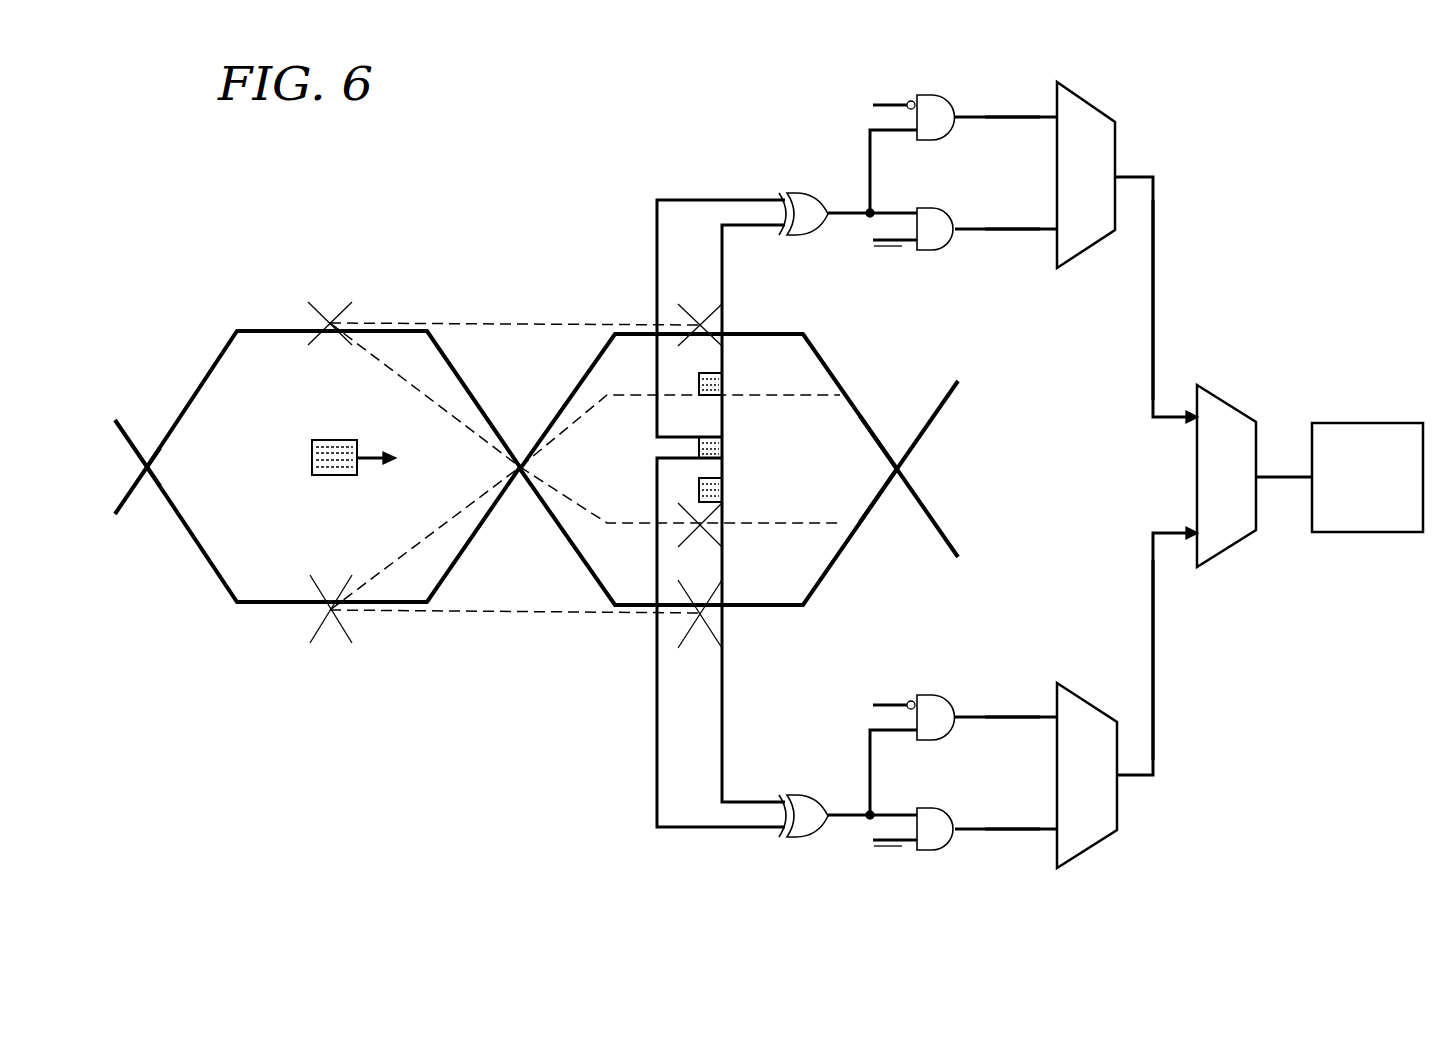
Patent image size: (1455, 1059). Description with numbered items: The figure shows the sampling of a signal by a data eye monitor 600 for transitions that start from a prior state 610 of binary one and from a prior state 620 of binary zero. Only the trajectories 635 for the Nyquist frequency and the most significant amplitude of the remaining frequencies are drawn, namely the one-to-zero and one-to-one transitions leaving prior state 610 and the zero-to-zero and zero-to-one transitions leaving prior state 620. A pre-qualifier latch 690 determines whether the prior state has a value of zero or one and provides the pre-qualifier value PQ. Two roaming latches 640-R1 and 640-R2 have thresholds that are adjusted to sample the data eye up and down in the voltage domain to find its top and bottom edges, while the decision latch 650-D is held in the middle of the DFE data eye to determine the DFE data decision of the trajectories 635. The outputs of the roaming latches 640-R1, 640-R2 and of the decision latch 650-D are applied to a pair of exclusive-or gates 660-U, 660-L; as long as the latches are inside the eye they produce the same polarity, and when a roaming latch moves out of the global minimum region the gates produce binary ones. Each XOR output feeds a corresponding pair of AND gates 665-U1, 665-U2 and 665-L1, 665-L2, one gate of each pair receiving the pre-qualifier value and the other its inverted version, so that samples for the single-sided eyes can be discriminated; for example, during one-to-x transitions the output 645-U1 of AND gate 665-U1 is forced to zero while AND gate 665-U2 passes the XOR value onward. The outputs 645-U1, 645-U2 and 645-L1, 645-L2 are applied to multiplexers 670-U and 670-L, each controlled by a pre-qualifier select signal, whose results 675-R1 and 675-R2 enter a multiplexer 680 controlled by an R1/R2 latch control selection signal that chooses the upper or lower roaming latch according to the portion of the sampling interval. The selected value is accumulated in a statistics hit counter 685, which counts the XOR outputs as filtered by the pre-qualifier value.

The data eye monitor 600 is at (355, 176).
The prior state 610 is at (312, 314).
The prior state 620 is at (312, 630).
The trajectories 635 is at (505, 636).
The roaming latch 640-R1 is at (753, 385).
The roaming latch 640-R2 is at (723, 492).
The decision latch 650-D is at (724, 448).
The exclusive or gate 660-U is at (800, 192).
The exclusive or gate 660-L is at (800, 838).
The AND gate 665-U1 is at (932, 96).
The AND gate 665-U2 is at (935, 250).
The AND gate 665-L1 is at (932, 696).
The AND gate 665-L2 is at (935, 850).
The output 645-U1 is at (1005, 119).
The output 645-U2 is at (1005, 228).
The output 645-L1 is at (1005, 719).
The output 645-L2 is at (1005, 828).
The multiplexer 670-U is at (1098, 110).
The multiplexer 670-L is at (1096, 848).
The R1 result line 675-R1 is at (1154, 252).
The R2 result line 675-R2 is at (1154, 698).
The multiplexer 680 is at (1226, 398).
The statistics hit counter 685 is at (1379, 423).
The pre-qualifier latch 690 is at (312, 454).